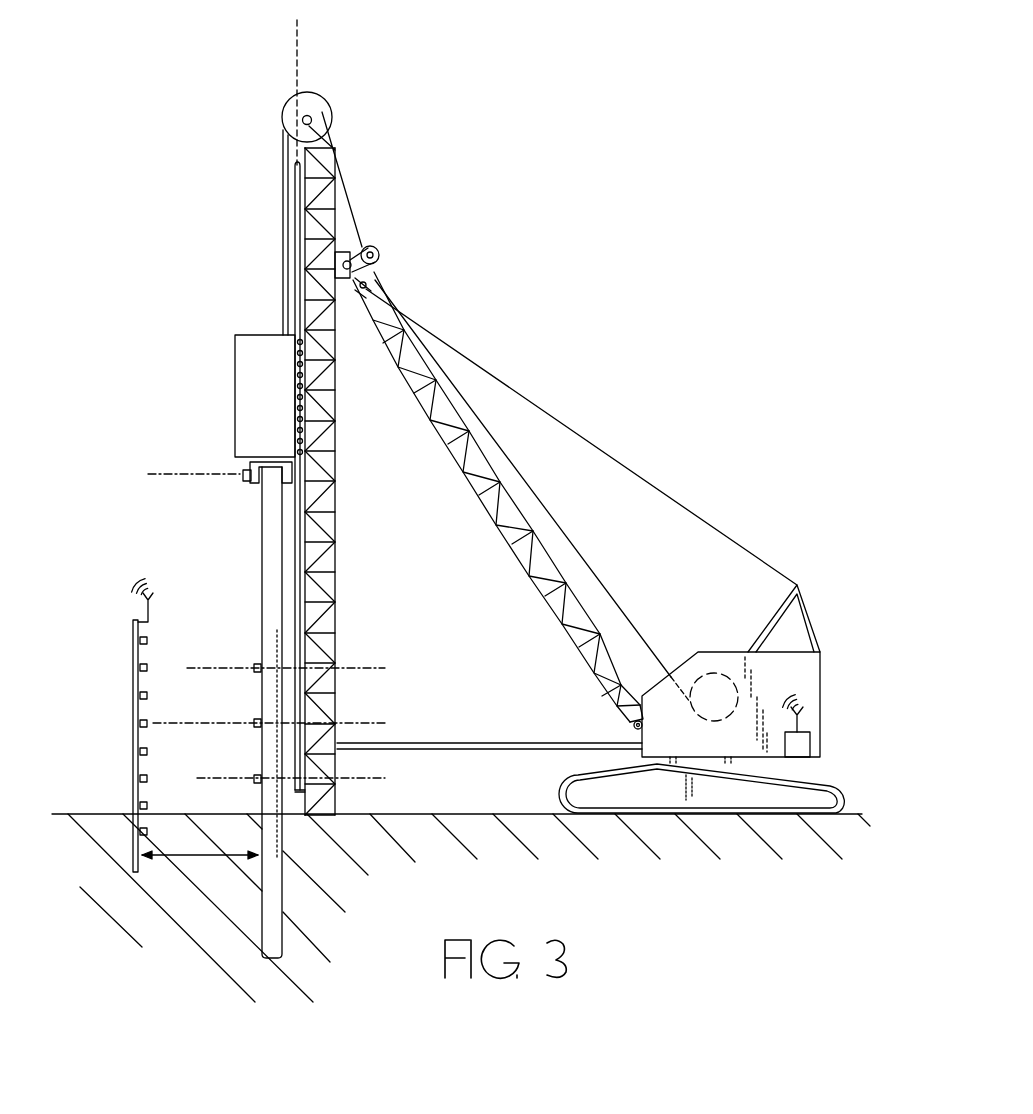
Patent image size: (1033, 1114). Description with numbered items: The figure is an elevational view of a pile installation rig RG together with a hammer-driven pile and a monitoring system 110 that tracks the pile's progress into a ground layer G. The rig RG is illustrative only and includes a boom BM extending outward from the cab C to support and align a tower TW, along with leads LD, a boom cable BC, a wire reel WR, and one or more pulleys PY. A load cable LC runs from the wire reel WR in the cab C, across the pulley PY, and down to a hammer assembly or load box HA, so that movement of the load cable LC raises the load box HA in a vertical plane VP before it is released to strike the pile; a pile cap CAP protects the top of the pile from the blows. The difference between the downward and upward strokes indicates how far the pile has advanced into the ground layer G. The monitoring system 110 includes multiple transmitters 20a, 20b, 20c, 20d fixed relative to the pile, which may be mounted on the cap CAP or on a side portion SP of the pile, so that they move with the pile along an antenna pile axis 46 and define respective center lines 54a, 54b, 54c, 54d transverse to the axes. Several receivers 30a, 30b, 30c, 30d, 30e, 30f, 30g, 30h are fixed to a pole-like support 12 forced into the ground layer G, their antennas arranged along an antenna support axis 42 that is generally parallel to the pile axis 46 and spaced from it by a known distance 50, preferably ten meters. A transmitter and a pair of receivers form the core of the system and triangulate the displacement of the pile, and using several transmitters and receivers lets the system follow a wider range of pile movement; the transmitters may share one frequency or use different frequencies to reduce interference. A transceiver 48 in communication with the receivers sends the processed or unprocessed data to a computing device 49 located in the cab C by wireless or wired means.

The system 110 is at (130, 690).
The support 12 is at (132, 640).
The transmitter 20a is at (257, 783).
The transmitter 20b is at (257, 720).
The transmitter 20c is at (257, 666).
The transmitter 20d is at (243, 480).
The receiver 30a is at (147, 640).
The receiver 30b is at (147, 668).
The receiver 30c is at (139, 696).
The receiver 30d is at (139, 723).
The receiver 30e is at (139, 751).
The receiver 30f is at (139, 778).
The receiver 30g is at (147, 805).
The receiver 30h is at (140, 832).
The antenna support axis 42 is at (130, 743).
The antenna pile axis 46 is at (243, 455).
The transceiver 48 is at (155, 592).
The computing device 49 is at (808, 747).
The distance 50 is at (199, 858).
The center line 54a is at (385, 778).
The center line 54b is at (385, 723).
The center line 54c is at (385, 668).
The center line 54d is at (150, 473).
The vertical plane VP is at (294, 45).
The pulley PY is at (323, 107).
The leads LD is at (302, 194).
The load cable LC is at (285, 250).
The rig RG is at (606, 276).
The hammer assembly HA is at (236, 428).
The pile cap CAP is at (293, 479).
The side portion SP is at (235, 687).
The tower TW is at (339, 524).
The boom cable BC is at (598, 448).
The boom BM is at (498, 527).
The wire reel WR is at (706, 676).
The cab C is at (814, 683).
The ground layer G is at (466, 814).